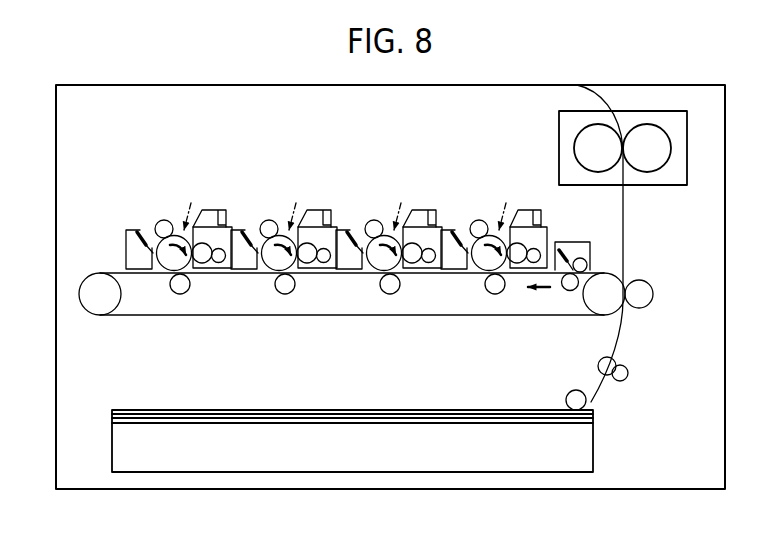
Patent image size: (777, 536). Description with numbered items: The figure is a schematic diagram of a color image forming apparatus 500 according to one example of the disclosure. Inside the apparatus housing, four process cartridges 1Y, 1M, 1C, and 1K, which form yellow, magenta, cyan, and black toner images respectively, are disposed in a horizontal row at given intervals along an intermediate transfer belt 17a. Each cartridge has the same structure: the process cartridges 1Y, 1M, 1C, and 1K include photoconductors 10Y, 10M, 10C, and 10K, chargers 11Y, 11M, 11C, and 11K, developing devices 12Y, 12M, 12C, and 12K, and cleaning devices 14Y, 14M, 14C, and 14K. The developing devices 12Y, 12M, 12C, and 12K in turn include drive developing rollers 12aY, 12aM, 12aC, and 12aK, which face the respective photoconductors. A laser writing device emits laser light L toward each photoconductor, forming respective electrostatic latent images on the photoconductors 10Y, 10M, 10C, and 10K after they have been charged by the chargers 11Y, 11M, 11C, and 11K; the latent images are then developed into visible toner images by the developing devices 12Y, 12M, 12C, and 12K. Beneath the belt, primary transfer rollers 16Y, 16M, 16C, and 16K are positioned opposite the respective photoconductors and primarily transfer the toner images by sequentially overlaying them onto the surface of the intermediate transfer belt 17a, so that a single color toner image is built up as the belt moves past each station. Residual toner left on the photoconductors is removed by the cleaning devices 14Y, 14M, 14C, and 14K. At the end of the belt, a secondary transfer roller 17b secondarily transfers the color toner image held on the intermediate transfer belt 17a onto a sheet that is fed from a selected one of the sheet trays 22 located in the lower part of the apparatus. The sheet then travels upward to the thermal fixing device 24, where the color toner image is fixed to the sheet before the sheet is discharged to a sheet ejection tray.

The color image forming apparatus 500 is at (631, 81).
The process cartridge 1K is at (172, 206).
The process cartridge 1C is at (279, 206).
The process cartridge 1M is at (385, 206).
The process cartridge 1Y is at (490, 206).
The photoconductor 10K is at (186, 268).
The photoconductor 10C is at (291, 268).
The photoconductor 10M is at (396, 268).
The photoconductor 10Y is at (500, 268).
The charger 11K is at (160, 220).
The charger 11C is at (268, 220).
The charger 11M is at (373, 220).
The charger 11Y is at (478, 220).
The developing device 12K is at (213, 231).
The developing device 12C is at (318, 231).
The developing device 12M is at (424, 231).
The developing device 12Y is at (529, 231).
The drive developing roller 12aK is at (207, 262).
The drive developing roller 12aC is at (312, 262).
The drive developing roller 12aM is at (417, 262).
The drive developing roller 12aY is at (522, 262).
The cleaning device 14K is at (126, 243).
The cleaning device 14C is at (242, 230).
The cleaning device 14M is at (348, 230).
The cleaning device 14Y is at (453, 230).
The primary transfer roller 16K is at (179, 294).
The primary transfer roller 16C is at (284, 294).
The primary transfer roller 16M is at (389, 294).
The primary transfer roller 16Y is at (494, 294).
The intermediate transfer belt 17a is at (152, 275).
The secondary transfer roller 17b is at (653, 294).
The sheet tray 22 is at (593, 443).
The thermal fixing device 24 is at (663, 186).
The laser light L is at (347, 210).